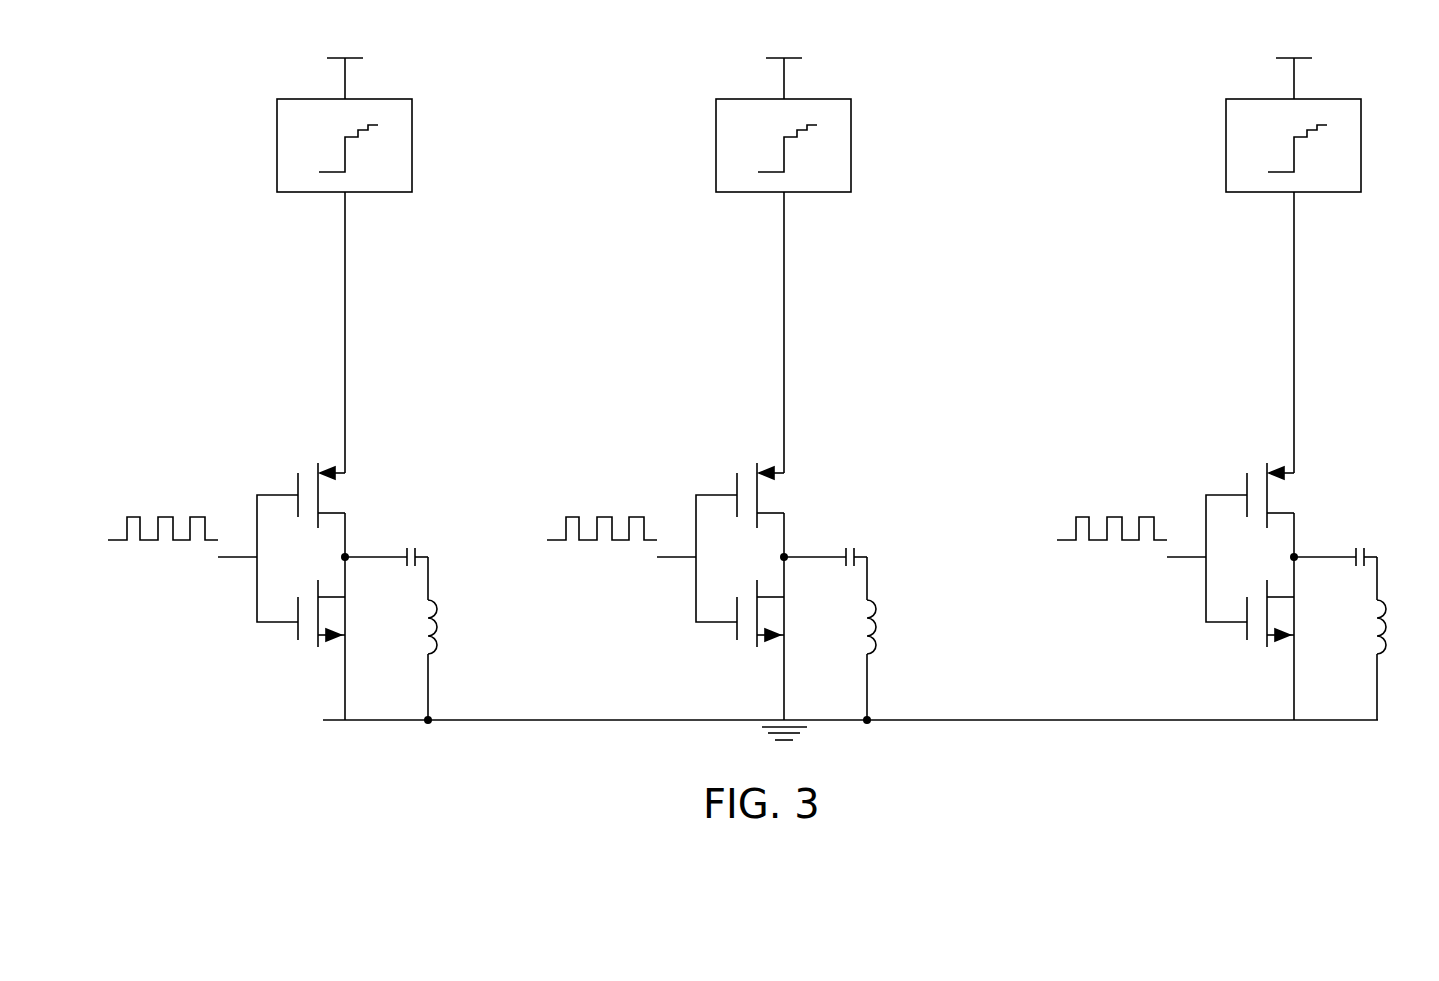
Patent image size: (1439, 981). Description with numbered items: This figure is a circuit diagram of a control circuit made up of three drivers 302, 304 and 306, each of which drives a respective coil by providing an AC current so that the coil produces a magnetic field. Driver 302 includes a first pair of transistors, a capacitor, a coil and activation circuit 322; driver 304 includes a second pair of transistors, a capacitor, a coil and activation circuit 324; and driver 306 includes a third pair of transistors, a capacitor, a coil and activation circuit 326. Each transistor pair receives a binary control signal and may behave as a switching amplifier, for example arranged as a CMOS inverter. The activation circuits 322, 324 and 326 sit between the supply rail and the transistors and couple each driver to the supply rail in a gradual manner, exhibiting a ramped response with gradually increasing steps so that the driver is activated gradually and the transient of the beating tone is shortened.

The driver 302 is at (148, 249).
The driver 304 is at (736, 377).
The driver 306 is at (1248, 375).
The activation circuit 322 is at (412, 144).
The activation circuit 324 is at (824, 145).
The activation circuit 326 is at (1332, 145).